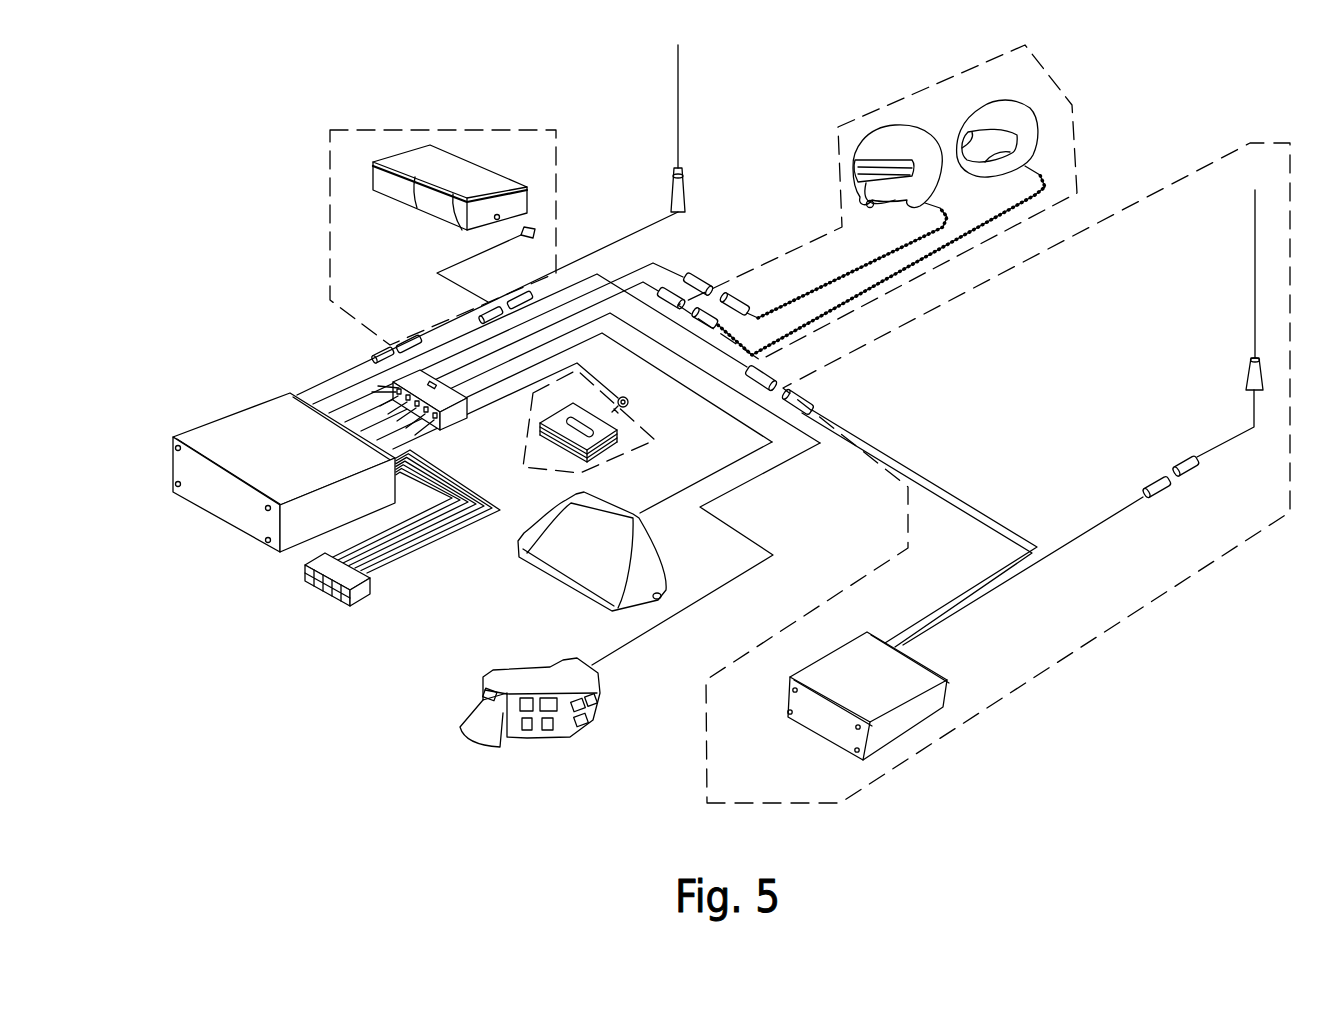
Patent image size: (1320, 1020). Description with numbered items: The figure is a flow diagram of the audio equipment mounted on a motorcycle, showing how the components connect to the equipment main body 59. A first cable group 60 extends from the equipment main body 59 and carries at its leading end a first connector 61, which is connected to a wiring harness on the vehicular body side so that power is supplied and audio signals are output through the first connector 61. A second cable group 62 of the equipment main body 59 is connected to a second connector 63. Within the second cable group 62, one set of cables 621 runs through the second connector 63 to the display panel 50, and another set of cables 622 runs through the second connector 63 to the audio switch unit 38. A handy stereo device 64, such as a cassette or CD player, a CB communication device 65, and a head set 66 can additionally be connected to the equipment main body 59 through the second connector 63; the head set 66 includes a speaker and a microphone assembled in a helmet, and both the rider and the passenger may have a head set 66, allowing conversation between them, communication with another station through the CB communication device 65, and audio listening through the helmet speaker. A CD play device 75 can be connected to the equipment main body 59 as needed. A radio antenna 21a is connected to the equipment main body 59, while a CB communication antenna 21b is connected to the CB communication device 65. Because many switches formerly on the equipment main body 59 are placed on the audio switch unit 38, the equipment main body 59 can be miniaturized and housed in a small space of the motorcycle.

The CD play device 75 is at (453, 165).
The radio antenna 21a is at (681, 128).
The CB communication antenna 21b is at (1252, 335).
The head set 66 is at (1077, 128).
The CB communication device 65 is at (913, 678).
The set of cables 622 is at (795, 457).
The set of cables 621 is at (737, 460).
The handy stereo device 64 is at (620, 438).
The equipment main body 59 is at (233, 513).
The first cable group 60 is at (420, 537).
The first connector 61 is at (303, 570).
The second cable group 62 is at (413, 442).
The second connector 63 is at (460, 422).
The display panel 50 is at (652, 568).
The audio switch unit 38 is at (602, 682).